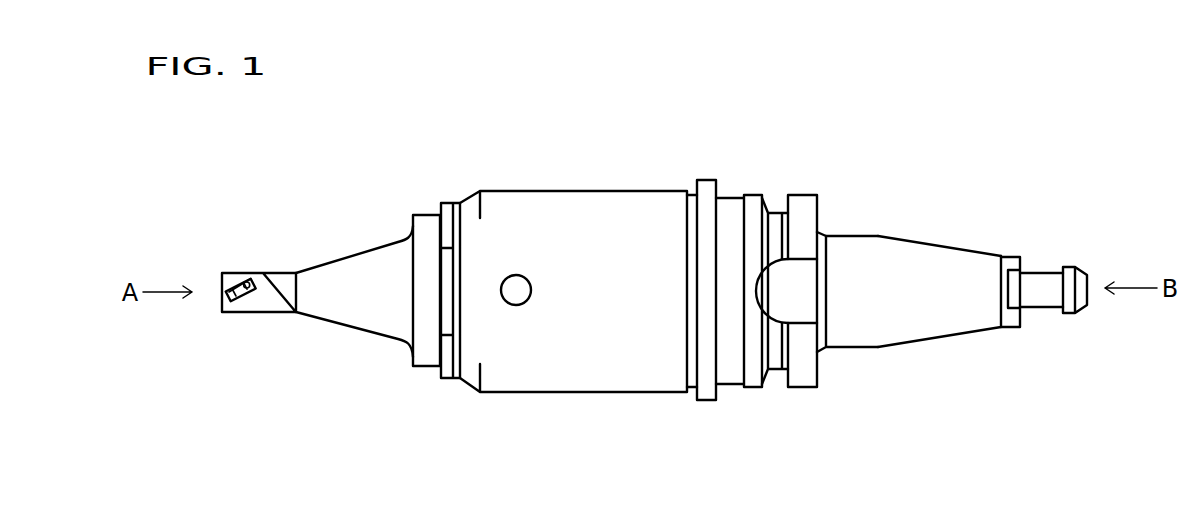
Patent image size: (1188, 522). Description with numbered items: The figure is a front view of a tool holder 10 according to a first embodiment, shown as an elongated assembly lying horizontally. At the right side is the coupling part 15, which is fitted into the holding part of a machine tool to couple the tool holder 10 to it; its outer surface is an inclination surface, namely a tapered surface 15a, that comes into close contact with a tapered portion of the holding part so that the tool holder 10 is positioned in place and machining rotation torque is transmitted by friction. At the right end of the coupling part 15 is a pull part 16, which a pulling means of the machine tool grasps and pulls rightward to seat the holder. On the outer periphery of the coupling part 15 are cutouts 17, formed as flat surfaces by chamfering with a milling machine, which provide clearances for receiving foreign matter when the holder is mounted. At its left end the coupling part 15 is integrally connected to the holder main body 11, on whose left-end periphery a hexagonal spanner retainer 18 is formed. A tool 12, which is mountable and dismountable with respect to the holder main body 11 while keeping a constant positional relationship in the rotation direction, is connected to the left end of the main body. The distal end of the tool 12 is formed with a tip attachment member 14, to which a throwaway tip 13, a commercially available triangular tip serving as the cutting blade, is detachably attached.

The tool holder 10 is at (915, 112).
The holder main body 11 is at (615, 213).
The tool 12 is at (345, 262).
The throwaway tip 13 is at (222, 305).
The tip attachment member 14 is at (228, 277).
The coupling part 15 is at (952, 265).
The tapered surface 15a is at (900, 238).
The pull part 16 is at (1045, 278).
The cutouts 17 is at (842, 235).
The hexagonal spanner retainer 18 is at (450, 213).